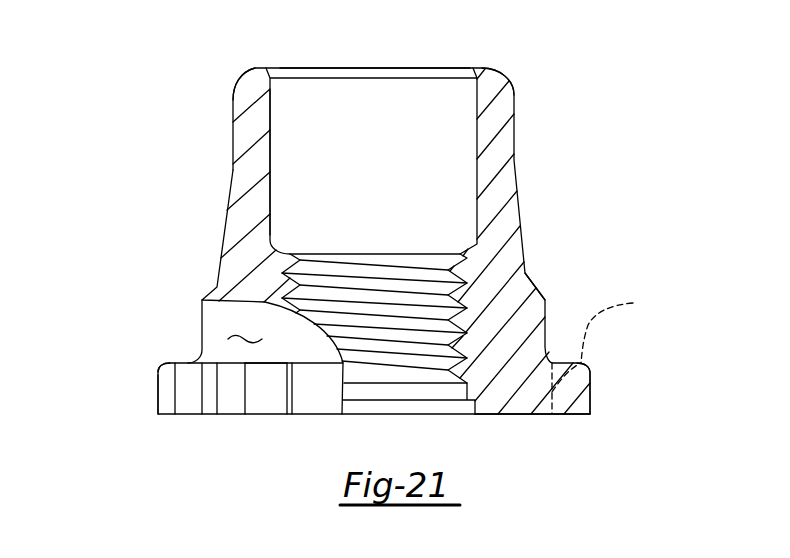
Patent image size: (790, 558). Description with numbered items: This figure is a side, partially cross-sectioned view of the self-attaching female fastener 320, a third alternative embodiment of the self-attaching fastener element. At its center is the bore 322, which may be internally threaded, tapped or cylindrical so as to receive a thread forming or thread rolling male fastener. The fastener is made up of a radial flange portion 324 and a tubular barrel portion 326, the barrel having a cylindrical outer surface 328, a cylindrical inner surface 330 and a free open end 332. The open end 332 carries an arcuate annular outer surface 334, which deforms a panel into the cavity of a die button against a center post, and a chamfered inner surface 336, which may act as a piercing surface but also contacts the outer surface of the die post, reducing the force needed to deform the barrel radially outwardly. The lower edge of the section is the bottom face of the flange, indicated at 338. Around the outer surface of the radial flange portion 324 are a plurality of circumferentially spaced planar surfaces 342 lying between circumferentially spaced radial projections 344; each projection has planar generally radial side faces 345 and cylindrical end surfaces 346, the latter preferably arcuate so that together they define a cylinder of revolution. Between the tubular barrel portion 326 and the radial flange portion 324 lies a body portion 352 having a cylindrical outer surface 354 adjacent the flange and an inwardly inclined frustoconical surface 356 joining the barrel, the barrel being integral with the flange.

The self-attaching female fastener element 320 is at (205, 126).
The bore 322 is at (386, 287).
The radial flange portion 324 is at (610, 383).
The tubular barrel portion 326 is at (522, 143).
The cylindrical outer surface 328 is at (233, 162).
The cylindrical inner surface 330 is at (272, 120).
The free open end 332 is at (332, 62).
The arcuate annular outer surface 334 is at (506, 80).
The chamfered inner surface 336 is at (268, 70).
The bottom surface 338 is at (539, 415).
The circumferentially spaced planar surfaces 342 is at (200, 452).
The radial projections 344 is at (271, 412).
The planar generally radial side faces 345 is at (156, 375).
The cylindrical end surfaces 346 is at (157, 402).
The body portion 352 is at (200, 315).
The cylindrical outer surface 354 is at (245, 327).
The inwardly inclined frustoconical surface 356 is at (538, 292).